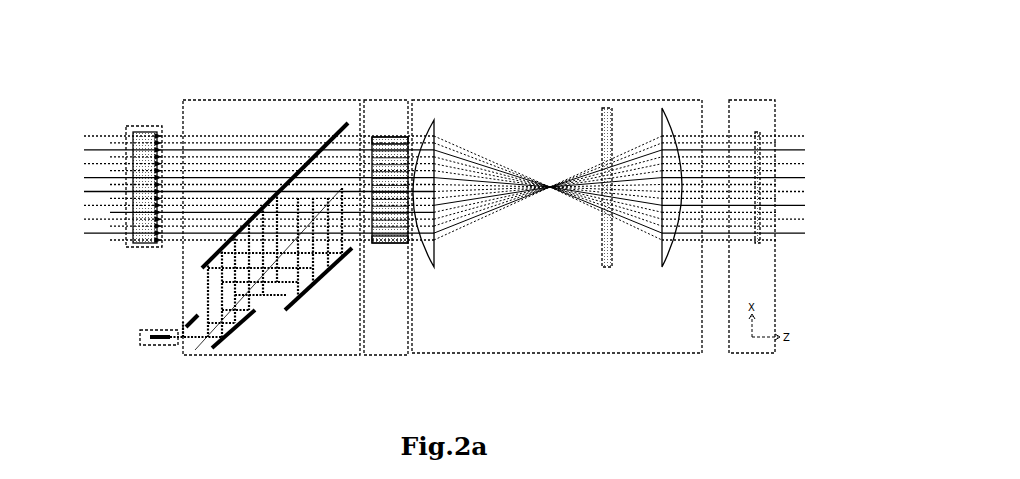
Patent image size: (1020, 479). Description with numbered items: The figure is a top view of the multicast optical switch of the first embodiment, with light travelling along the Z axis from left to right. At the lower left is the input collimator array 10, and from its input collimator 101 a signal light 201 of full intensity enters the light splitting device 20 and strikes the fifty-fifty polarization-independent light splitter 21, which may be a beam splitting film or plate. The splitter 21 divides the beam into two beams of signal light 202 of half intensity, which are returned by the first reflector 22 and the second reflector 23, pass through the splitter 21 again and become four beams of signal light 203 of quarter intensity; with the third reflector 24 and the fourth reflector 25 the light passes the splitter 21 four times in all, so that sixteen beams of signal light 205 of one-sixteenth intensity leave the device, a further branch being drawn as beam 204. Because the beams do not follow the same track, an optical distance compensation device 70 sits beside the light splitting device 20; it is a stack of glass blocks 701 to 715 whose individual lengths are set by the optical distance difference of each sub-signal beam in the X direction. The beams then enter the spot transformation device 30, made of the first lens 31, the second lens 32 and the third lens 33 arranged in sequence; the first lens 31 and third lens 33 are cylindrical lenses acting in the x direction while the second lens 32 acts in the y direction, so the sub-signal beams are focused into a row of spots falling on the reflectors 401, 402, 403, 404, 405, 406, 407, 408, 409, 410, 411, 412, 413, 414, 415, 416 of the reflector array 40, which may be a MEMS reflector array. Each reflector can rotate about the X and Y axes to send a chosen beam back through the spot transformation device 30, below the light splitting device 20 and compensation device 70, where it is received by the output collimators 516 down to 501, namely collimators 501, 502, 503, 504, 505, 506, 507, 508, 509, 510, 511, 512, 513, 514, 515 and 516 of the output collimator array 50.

The input collimator array 10 is at (145, 346).
The input collimator 101 is at (150, 337).
The light splitting device 20 is at (267, 100).
The light splitter 21 is at (190, 342).
The first reflector 22 is at (190, 320).
The second reflector 23 is at (232, 333).
The third reflector 24 is at (210, 257).
The fourth reflector 25 is at (317, 287).
The signal light 201 is at (183, 330).
The signal light 202 is at (208, 343).
The signal light 203 is at (208, 285).
The light beam 204 is at (266, 300).
The signal light 205 is at (353, 246).
The spot transformation device 30 is at (560, 100).
The first lens 31 is at (436, 122).
The second lens 32 is at (610, 113).
The third lens 33 is at (673, 120).
The reflector array 40 is at (758, 100).
The output collimator array 50 is at (134, 127).
The optical distance compensation device 70 is at (370, 100).
The glass block 701 is at (398, 243).
The glass block 715 is at (385, 137).
The reflector 401 is at (744, 136).
The reflector 402 is at (730, 142).
The reflector 403 is at (744, 150).
The reflector 404 is at (730, 156).
The reflector 405 is at (744, 163).
The reflector 406 is at (730, 170).
The reflector 407 is at (744, 177).
The reflector 408 is at (730, 184).
The reflector 409 is at (744, 191).
The reflector 410 is at (730, 198).
The reflector 411 is at (744, 205).
The reflector 412 is at (730, 212).
The reflector 413 is at (744, 219).
The reflector 414 is at (730, 226).
The reflector 415 is at (744, 233).
The reflector 416 is at (730, 240).
The output collimator 501 is at (111, 136).
The output collimator 502 is at (125, 142).
The output collimator 503 is at (111, 150).
The output collimator 504 is at (125, 156).
The output collimator 505 is at (111, 163).
The output collimator 506 is at (125, 170).
The output collimator 507 is at (111, 177).
The output collimator 508 is at (125, 184).
The output collimator 509 is at (111, 191).
The output collimator 510 is at (125, 198).
The output collimator 511 is at (111, 205).
The output collimator 512 is at (125, 212).
The output collimator 513 is at (111, 219).
The output collimator 514 is at (125, 226).
The output collimator 515 is at (111, 233).
The output collimator 516 is at (125, 240).